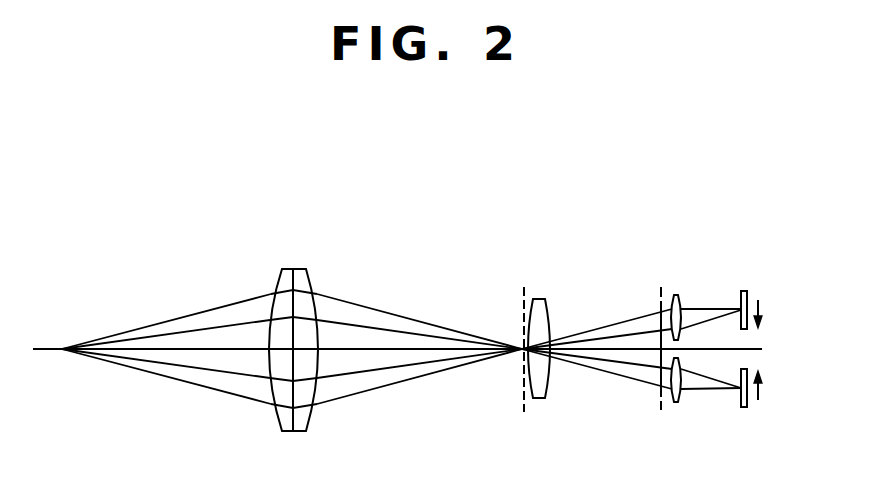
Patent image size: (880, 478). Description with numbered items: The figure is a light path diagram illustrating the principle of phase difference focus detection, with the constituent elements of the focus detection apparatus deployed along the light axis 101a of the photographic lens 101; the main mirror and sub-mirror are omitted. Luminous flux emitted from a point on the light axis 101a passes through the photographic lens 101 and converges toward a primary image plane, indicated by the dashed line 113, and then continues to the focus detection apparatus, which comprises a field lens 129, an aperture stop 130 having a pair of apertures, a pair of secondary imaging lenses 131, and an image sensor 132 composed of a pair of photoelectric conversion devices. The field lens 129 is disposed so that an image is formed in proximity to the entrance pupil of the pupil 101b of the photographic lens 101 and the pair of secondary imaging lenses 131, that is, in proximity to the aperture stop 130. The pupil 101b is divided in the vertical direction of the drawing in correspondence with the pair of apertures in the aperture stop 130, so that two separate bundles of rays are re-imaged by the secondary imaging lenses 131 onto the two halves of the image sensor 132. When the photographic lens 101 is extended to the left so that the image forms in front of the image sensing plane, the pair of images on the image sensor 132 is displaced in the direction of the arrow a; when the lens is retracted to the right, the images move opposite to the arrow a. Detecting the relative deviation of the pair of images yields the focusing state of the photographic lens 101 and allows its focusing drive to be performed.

The photographic lens 101 is at (285, 269).
The light axis 101a is at (154, 347).
The pupil 101b is at (296, 332).
The primary imaging plane (predetermined focal plane) 113 is at (522, 289).
The field lens 129 is at (540, 299).
The aperture stop 130 is at (660, 289).
The secondary imaging lenses 131 is at (676, 294).
The image sensor 132 is at (743, 290).
The arrow a is at (762, 305).